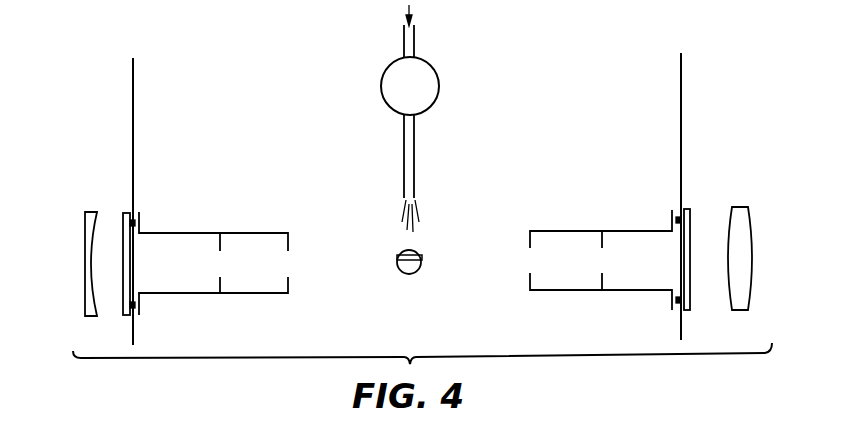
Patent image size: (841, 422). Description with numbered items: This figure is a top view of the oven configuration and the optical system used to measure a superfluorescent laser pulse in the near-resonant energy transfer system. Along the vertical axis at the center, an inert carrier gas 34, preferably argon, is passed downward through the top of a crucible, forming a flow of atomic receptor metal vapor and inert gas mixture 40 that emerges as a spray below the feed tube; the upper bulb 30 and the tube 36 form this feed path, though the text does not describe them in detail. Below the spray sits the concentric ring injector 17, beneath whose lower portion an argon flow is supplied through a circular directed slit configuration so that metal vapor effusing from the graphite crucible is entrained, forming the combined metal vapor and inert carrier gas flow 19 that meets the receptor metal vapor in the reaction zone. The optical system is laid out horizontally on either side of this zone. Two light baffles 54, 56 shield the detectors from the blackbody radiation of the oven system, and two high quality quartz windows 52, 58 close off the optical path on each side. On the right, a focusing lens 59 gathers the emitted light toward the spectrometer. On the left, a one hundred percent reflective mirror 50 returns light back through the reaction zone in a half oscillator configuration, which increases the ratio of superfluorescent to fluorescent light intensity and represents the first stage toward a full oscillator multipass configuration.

The concentric ring injector 17 is at (426, 255).
The combined metal vapor/inert carrier gas flow 19 is at (397, 257).
The bulb reservoir 30 is at (432, 64).
The inert carrier gas 34 is at (407, 13).
The tube 36 is at (404, 42).
The atomic metal vapor/inert gas mixture 40 is at (405, 212).
The 100% reflective mirror 50 is at (83, 222).
The quartz window 52 is at (123, 222).
The light baffle 54 is at (200, 233).
The light baffle 56 is at (625, 231).
The quartz window 58 is at (692, 215).
The focusing lens 59 is at (742, 208).